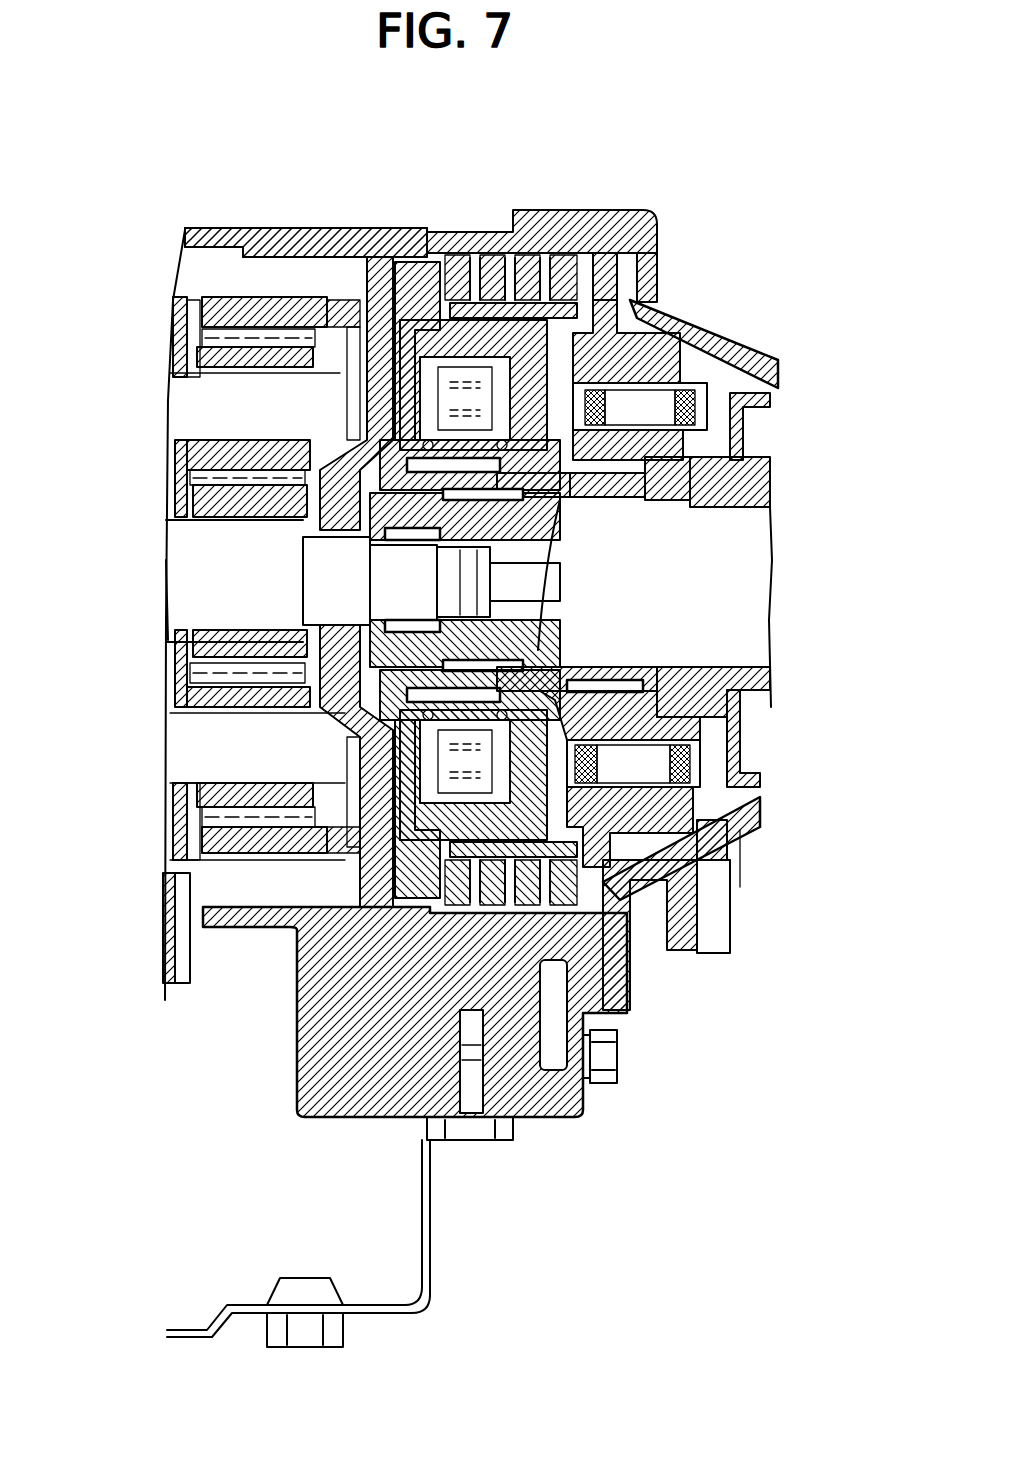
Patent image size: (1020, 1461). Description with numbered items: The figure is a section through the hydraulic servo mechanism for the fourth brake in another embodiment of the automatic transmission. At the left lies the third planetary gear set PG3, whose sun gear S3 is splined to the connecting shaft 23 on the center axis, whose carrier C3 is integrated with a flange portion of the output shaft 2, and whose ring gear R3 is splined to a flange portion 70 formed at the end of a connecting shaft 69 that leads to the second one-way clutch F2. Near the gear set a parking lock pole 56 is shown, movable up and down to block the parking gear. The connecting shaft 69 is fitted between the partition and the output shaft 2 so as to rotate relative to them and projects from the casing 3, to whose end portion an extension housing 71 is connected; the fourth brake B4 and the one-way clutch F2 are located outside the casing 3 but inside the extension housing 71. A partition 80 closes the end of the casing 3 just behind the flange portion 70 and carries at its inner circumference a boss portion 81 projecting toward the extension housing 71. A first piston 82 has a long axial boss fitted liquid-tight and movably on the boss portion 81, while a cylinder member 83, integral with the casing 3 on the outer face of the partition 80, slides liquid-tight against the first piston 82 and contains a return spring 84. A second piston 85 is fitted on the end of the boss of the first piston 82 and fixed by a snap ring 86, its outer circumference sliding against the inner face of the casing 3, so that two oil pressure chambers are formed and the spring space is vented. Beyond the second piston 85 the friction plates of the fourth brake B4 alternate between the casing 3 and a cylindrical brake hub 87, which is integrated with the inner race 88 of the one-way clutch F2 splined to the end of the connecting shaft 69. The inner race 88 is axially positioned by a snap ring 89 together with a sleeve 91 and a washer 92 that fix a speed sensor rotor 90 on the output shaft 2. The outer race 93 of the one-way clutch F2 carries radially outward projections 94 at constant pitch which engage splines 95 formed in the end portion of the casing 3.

The output shaft 2 is at (733, 502).
The casing 3 is at (290, 246).
The connecting shaft 23 is at (200, 590).
The parking lock pole 56 is at (175, 975).
The connecting shaft 69 is at (594, 500).
The flange portion 70 is at (300, 530).
The extension housing 71 is at (752, 348).
The partition 80 is at (356, 258).
The boss portion 81 is at (447, 458).
The first piston 82 is at (388, 432).
The cylinder member 83 is at (393, 262).
The return spring 84 is at (533, 660).
The second piston 85 is at (576, 330).
The snap ring 86 is at (557, 514).
The brake hub 87 is at (498, 266).
The inner race 88 is at (637, 462).
The snap ring 89 is at (600, 662).
The speed sensor rotor 90 is at (740, 443).
The sleeve 91 is at (748, 495).
The washer 92 is at (680, 500).
The outer race 93 is at (688, 364).
The radially outward projections 94 is at (634, 262).
The splines 95 is at (594, 252).
The fourth brake B4 is at (479, 243).
The carrier C3 is at (215, 405).
The second one-way clutch F2 is at (632, 402).
The third planetary gear set PG3 is at (251, 895).
The ring gear R3 is at (242, 333).
The sun gear S3 is at (215, 507).